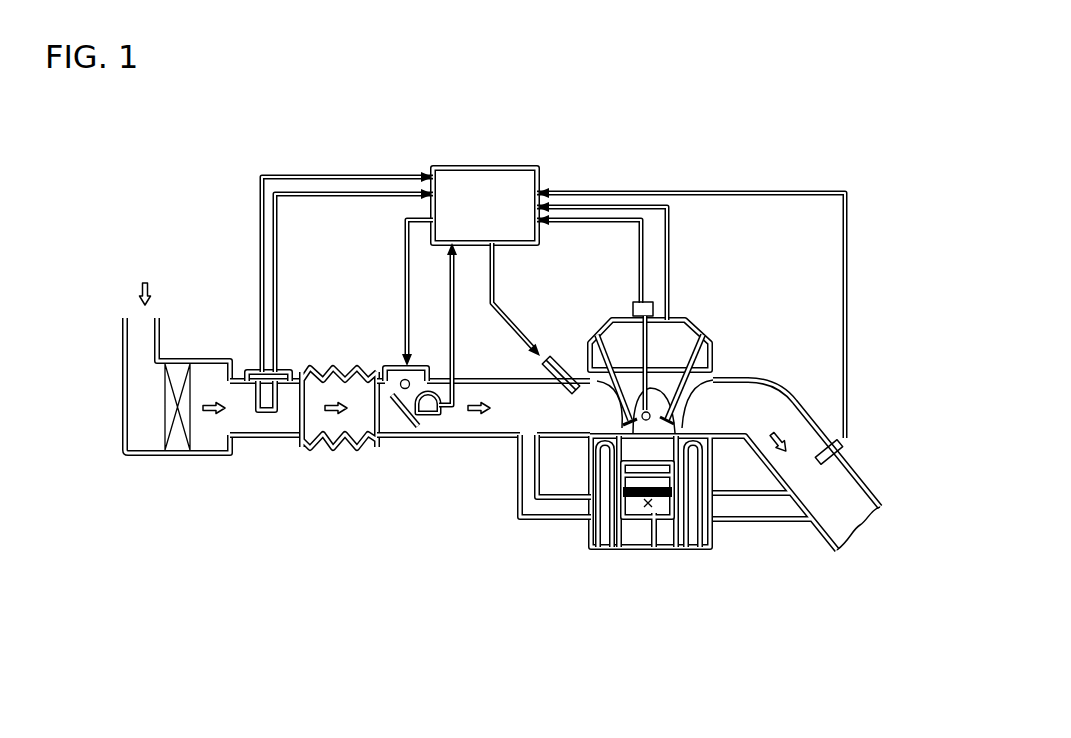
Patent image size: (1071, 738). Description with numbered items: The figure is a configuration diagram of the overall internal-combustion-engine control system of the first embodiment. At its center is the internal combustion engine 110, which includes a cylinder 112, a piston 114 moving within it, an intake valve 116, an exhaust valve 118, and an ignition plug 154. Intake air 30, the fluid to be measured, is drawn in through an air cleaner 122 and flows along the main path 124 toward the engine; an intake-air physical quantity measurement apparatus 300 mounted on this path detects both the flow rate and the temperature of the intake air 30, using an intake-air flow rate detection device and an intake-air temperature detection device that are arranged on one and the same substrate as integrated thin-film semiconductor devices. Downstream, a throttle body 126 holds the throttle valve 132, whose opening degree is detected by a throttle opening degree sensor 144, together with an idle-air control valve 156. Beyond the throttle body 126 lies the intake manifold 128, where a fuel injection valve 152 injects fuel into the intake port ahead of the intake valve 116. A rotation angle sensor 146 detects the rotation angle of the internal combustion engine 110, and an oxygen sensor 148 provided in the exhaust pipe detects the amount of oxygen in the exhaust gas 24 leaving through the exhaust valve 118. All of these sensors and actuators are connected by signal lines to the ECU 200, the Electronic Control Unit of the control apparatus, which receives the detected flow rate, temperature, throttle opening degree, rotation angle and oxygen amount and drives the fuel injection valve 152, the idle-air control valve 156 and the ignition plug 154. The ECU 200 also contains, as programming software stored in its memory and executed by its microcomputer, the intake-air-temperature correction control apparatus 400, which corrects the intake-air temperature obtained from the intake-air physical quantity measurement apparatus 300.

The exhaust gas 24 is at (787, 433).
The intake air 30 is at (157, 284).
The internal combustion engine 110 is at (690, 548).
The cylinder 112 is at (600, 550).
The piston 114 is at (640, 533).
The intake valve 116 is at (595, 325).
The exhaust valve 118 is at (705, 335).
The air cleaner 122 is at (174, 455).
The main path 124 is at (268, 440).
The throttle body 126 is at (390, 452).
The intake manifold 128 is at (490, 440).
The throttle valve 132 is at (400, 440).
The throttle opening degree sensor 144 is at (437, 413).
The rotation angle sensor 146 is at (628, 303).
The oxygen sensor 148 is at (850, 446).
The fuel injection valve 152 is at (553, 355).
The ignition plug 154 is at (585, 458).
The idle-air control valve 156 is at (395, 365).
The ECU 200 is at (522, 166).
The intake-air physical quantity measurement apparatus 300 is at (290, 366).
The intake-air-temperature correction control apparatus 400 is at (247, 371).